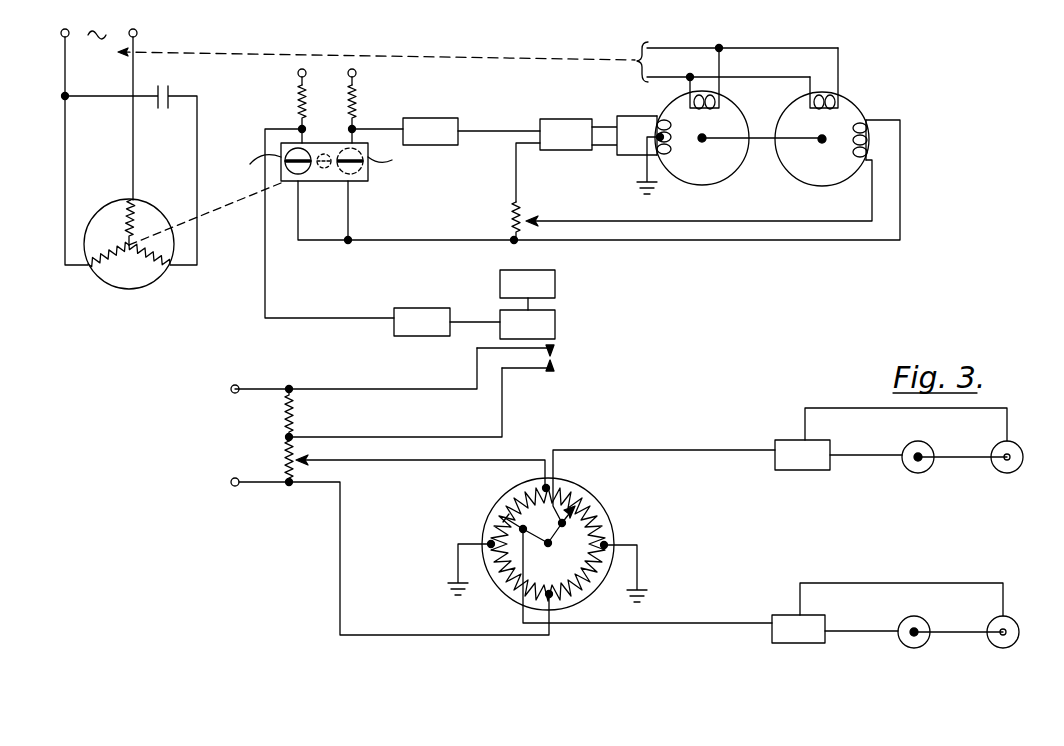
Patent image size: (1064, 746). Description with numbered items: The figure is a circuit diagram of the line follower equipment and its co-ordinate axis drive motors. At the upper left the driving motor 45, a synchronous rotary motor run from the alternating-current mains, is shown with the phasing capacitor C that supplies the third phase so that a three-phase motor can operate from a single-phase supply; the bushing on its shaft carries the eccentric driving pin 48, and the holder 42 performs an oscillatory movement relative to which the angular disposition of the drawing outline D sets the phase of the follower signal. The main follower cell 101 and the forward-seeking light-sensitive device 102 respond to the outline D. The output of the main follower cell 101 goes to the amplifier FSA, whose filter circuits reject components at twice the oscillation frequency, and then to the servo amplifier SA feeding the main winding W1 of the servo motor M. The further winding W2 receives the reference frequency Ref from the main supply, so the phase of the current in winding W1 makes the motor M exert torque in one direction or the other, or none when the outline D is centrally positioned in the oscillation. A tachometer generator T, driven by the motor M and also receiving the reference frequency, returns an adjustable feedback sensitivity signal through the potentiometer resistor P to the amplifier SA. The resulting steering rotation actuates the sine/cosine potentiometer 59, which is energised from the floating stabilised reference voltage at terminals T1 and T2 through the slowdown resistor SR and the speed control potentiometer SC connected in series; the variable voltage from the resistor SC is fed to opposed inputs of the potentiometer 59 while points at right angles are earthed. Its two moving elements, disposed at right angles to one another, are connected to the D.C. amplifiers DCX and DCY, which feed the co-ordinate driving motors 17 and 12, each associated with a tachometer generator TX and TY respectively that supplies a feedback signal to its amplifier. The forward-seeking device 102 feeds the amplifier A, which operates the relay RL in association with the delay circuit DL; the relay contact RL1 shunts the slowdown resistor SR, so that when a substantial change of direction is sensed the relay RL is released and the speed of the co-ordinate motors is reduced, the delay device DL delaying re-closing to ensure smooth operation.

The driving motor 45 is at (150, 273).
The eccentric driving pin 48 is at (324, 152).
The forward-seeking light-sensitive device 102 is at (297, 175).
The holder 42 is at (326, 177).
The main follower cell 101 is at (357, 168).
The sine/cosine potentiometer 59 is at (587, 530).
The co-ordinate driving motor 17 is at (954, 465).
The co-ordinate driving motor 12 is at (950, 639).
The phasing capacitor C is at (131, 175).
The outline D is at (329, 167).
The amplifier FSA is at (430, 131).
The servo amplifier SA is at (566, 134).
The potentiometer resistor P is at (683, 191).
The servo motor M is at (729, 121).
The main winding W1 is at (672, 140).
The further winding W2 is at (724, 104).
The tachometer generator T is at (800, 171).
The amplifier A is at (422, 322).
The relay RL is at (527, 324).
The delay circuit DL is at (527, 284).
The relay contact RL1 is at (557, 358).
The terminal T1 is at (245, 369).
The terminal T2 is at (241, 469).
The slowdown resistor SR is at (276, 415).
The speed control potentiometer SC is at (402, 464).
The D.C. amplifier DCX is at (802, 455).
The D.C. amplifier DCY is at (798, 629).
The tachometer generator TX is at (1015, 465).
The tachometer generator TY is at (1011, 640).
The reference signal Ref is at (383, 58).